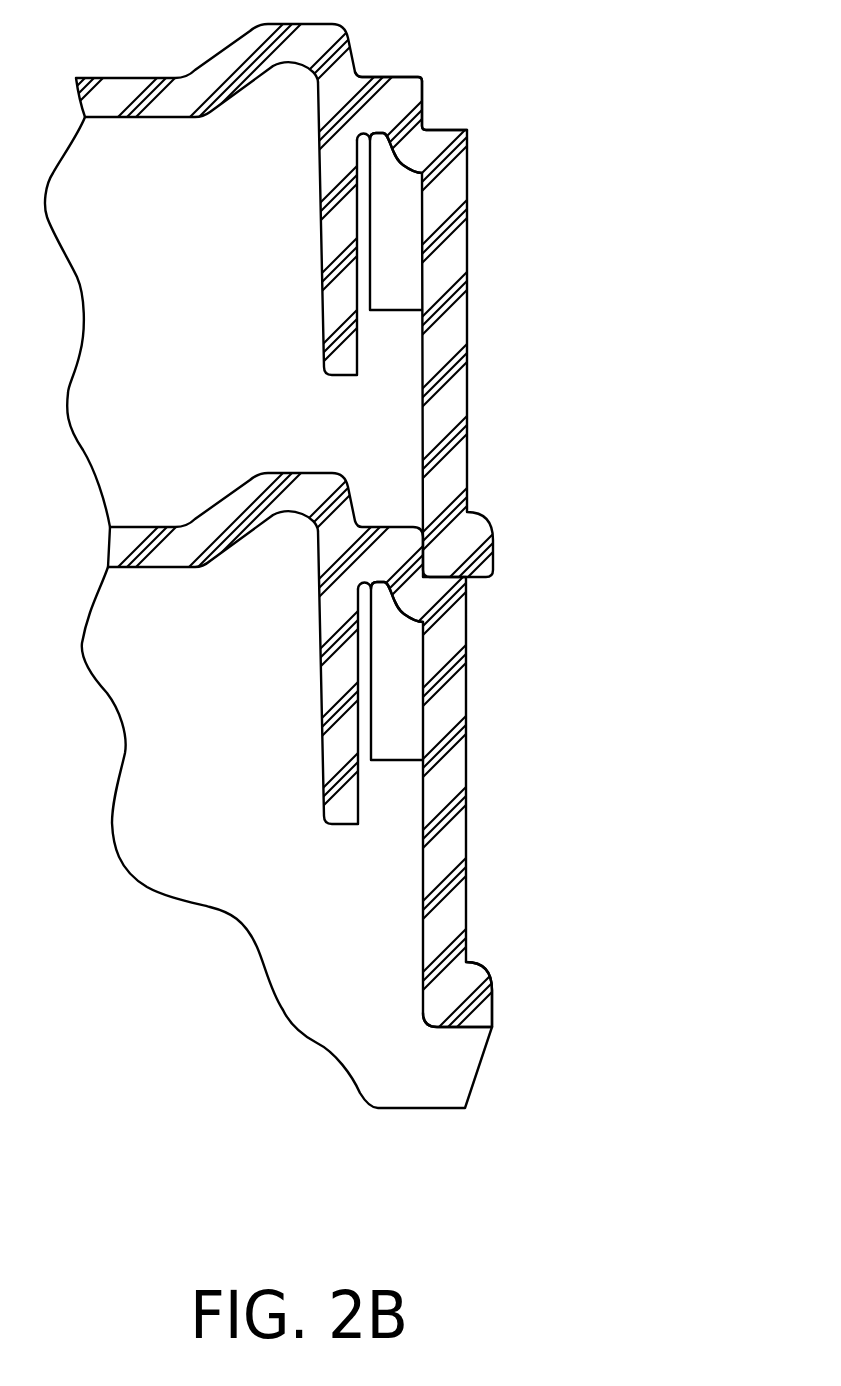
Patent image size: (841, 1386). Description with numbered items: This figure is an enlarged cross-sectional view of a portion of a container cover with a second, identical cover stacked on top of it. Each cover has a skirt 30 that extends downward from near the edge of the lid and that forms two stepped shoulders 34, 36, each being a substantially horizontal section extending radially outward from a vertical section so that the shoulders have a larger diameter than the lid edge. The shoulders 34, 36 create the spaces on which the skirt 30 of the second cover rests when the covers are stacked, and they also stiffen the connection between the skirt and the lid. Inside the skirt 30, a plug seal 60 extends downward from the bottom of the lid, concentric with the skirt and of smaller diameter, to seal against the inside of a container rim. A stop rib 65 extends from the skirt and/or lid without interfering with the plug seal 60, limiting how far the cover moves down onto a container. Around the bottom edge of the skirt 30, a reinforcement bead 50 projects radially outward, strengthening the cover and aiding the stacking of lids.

The skirt 30 is at (462, 765).
The stepped shoulder 34 is at (421, 79).
The shoulder 36 is at (467, 131).
The reinforcement bead 50 is at (482, 1015).
The plug seal 60 is at (337, 228).
The stop ribs 65 is at (393, 222).